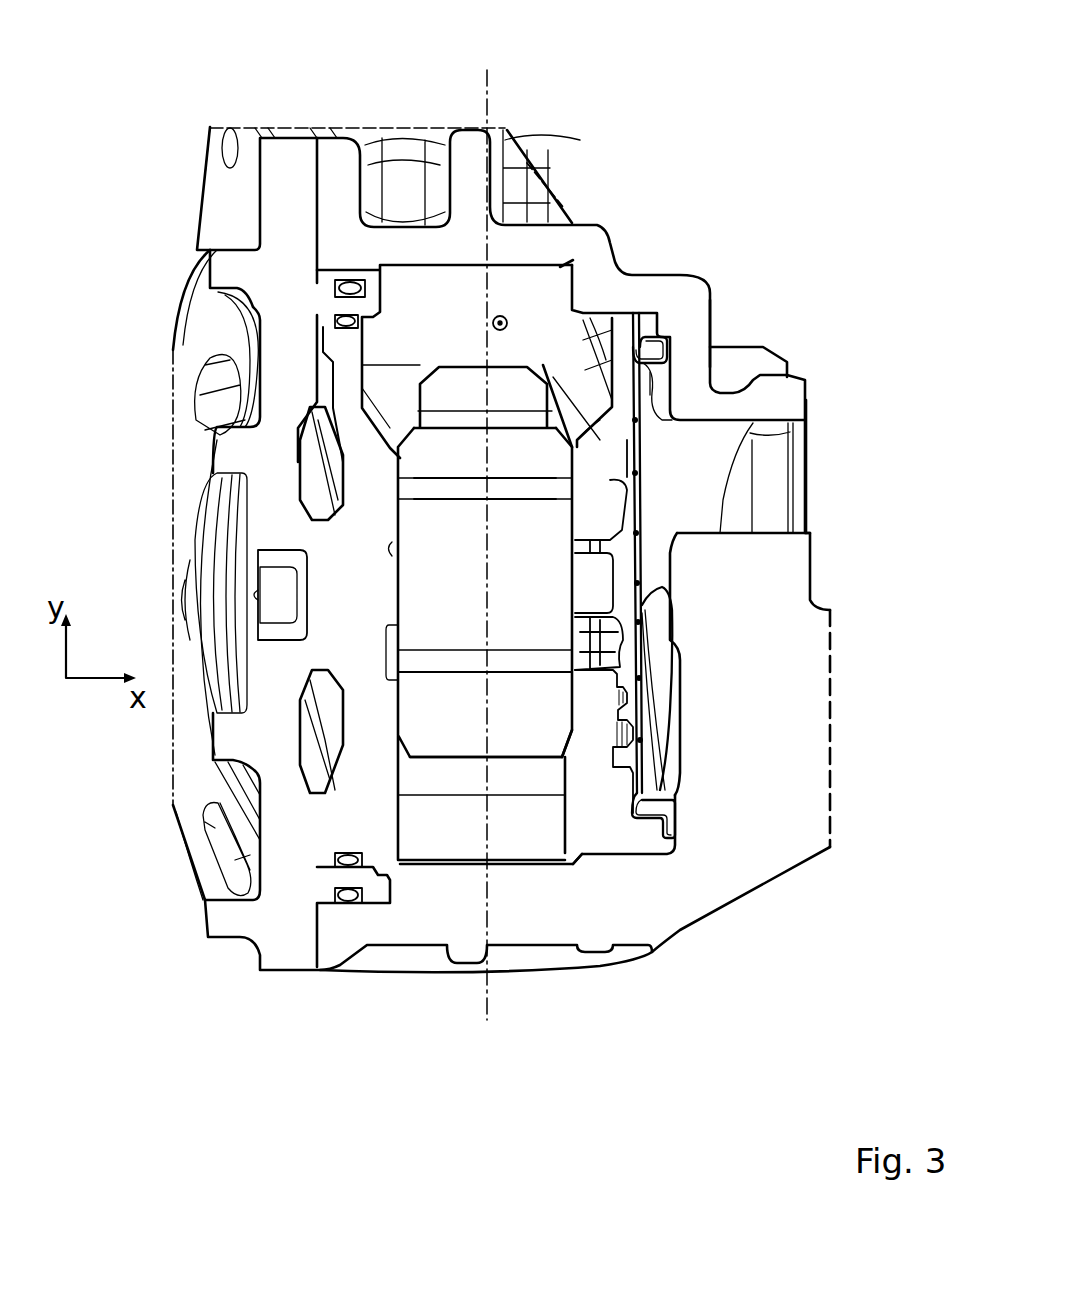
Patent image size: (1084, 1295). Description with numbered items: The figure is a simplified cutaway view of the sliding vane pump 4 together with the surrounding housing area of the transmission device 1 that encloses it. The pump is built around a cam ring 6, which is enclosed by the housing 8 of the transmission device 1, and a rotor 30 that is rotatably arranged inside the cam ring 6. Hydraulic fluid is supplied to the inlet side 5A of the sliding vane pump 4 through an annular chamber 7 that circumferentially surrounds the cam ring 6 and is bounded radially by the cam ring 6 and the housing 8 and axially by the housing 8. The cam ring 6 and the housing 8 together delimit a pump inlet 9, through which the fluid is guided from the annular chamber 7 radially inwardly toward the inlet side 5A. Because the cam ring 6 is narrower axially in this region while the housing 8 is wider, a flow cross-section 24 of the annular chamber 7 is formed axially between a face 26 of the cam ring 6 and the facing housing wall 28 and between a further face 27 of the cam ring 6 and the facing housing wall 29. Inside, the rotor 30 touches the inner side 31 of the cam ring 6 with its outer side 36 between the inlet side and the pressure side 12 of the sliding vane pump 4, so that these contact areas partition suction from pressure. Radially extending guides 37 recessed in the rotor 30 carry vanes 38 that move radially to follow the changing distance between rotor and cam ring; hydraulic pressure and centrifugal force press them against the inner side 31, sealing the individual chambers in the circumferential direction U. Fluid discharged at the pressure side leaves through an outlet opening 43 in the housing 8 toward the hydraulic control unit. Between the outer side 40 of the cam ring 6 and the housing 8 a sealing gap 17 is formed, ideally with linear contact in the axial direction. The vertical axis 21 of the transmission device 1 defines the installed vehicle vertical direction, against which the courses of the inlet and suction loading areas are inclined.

The transmission device 1 is at (681, 152).
The sliding vane pump 4 is at (425, 843).
The inlet side 5A is at (401, 429).
The cam ring 6 is at (531, 836).
The annular chamber 7 is at (556, 302).
The housing 8 is at (690, 315).
The pump inlet 9 is at (616, 334).
The pressure side of the sliding vane pump 12 is at (816, 493).
The sealing gap 17 is at (561, 867).
The vertical axis of the transmission device 21 is at (488, 1020).
The flow cross-section of the annular chamber 24 is at (437, 310).
The face of the cam ring 26 is at (597, 349).
The face of the cam ring 27 is at (420, 368).
The housing wall 28 is at (645, 426).
The housing wall 29 is at (425, 384).
The rotor 30 is at (523, 707).
The inner side of the cam ring 31 is at (452, 776).
The outer side of the rotor 36 is at (529, 752).
The guide 37 is at (506, 501).
The vane 38 is at (552, 486).
The outer side of the cam ring 40 is at (470, 355).
The outlet opening 43 is at (763, 463).
The circumferential direction U is at (500, 315).